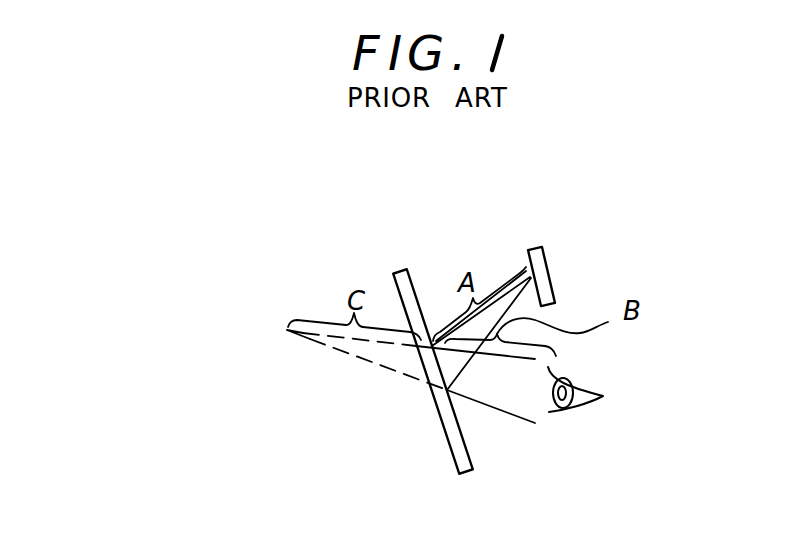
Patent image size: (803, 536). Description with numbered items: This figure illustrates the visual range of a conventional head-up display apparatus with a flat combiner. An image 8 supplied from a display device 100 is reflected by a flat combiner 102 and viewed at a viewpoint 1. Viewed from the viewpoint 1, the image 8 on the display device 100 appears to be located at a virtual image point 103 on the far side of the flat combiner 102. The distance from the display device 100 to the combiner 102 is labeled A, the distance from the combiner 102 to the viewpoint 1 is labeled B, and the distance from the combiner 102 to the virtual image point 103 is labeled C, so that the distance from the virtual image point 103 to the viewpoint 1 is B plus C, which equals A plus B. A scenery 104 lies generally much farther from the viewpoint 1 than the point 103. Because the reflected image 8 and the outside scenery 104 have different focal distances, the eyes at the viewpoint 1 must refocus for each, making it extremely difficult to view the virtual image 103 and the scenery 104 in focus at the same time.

The viewpoint 1 is at (602, 384).
The image 8 is at (526, 269).
The display device 100 is at (554, 279).
The flat combiner 102 is at (444, 431).
The virtual image point 103 is at (292, 340).
The scenery 104 is at (118, 338).